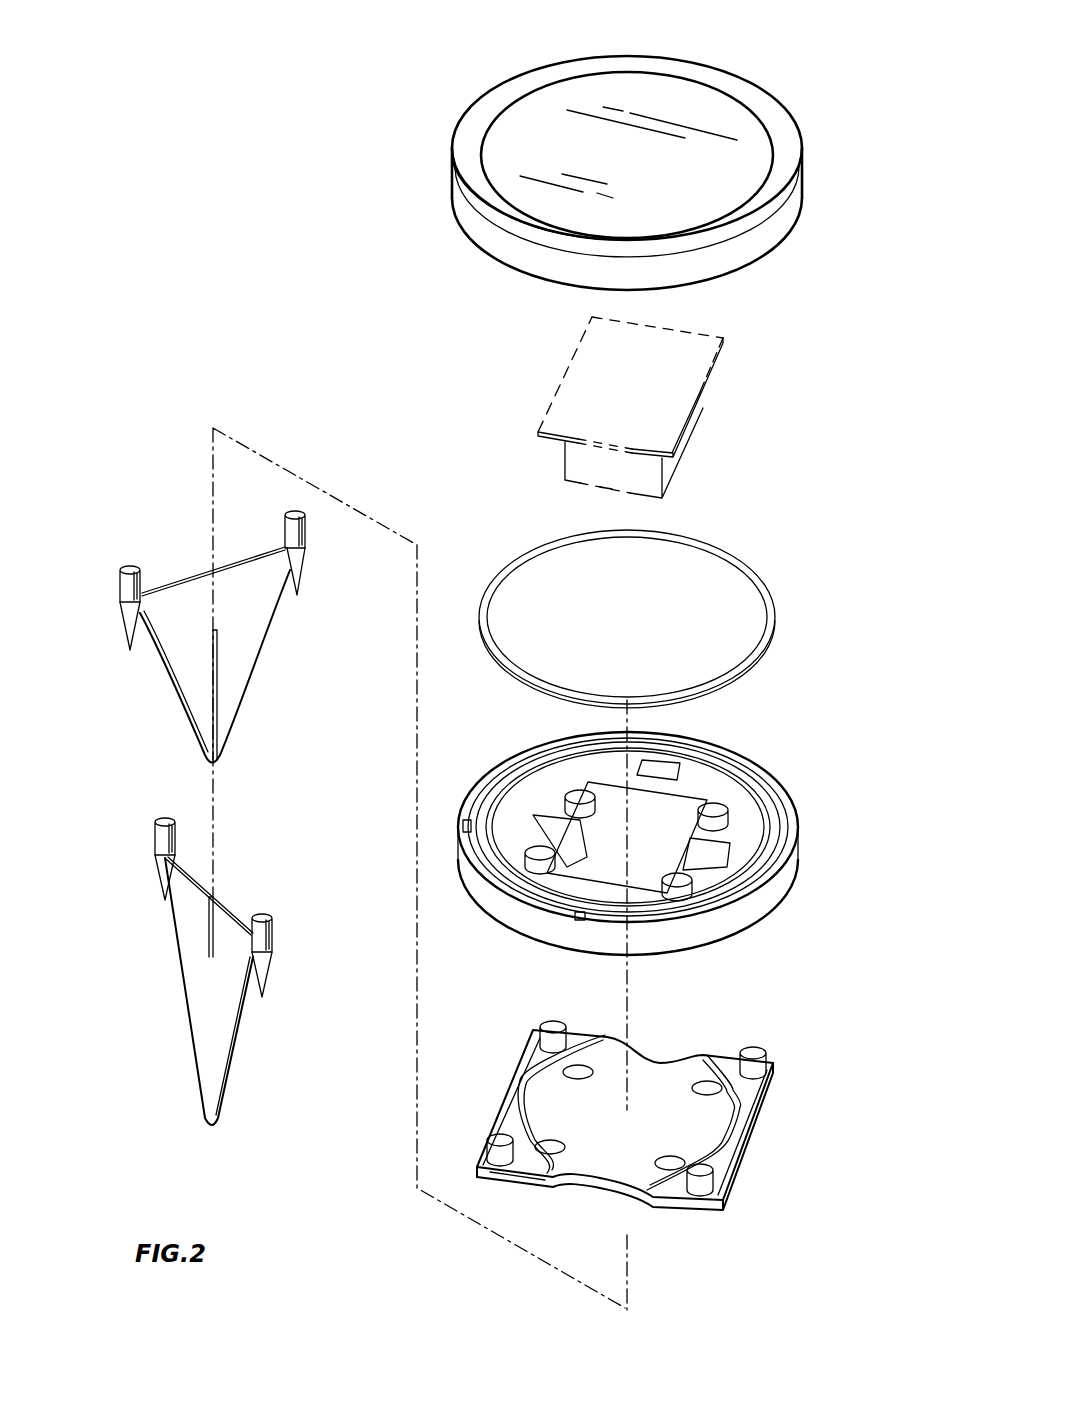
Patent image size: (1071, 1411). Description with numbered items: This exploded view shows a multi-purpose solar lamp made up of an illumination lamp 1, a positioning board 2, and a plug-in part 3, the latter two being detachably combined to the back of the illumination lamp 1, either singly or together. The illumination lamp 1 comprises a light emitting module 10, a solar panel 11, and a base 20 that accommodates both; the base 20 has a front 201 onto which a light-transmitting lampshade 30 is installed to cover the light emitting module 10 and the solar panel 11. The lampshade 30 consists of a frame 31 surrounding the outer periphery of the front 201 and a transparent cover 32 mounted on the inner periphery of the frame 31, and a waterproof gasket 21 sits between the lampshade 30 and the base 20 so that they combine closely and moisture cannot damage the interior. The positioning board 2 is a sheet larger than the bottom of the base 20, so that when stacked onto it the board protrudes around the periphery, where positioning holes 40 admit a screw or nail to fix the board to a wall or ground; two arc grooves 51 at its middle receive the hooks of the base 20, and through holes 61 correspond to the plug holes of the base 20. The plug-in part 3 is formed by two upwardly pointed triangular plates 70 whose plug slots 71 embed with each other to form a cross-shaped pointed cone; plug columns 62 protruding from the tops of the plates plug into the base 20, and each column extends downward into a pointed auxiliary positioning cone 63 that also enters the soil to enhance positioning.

The illumination lamp 1 is at (797, 100).
The positioning board 2 is at (728, 1222).
The plug-in part 3 is at (160, 542).
The light emitting module 10 is at (562, 459).
The solar panel 11 is at (565, 393).
The base 20 is at (772, 903).
The front 201 is at (735, 800).
The waterproof gasket 21 is at (720, 556).
The light-transmitting lampshade 30 is at (760, 262).
The frame 31 is at (452, 202).
The transparent cover 32 is at (521, 112).
The positioning holes 40 is at (548, 1022).
The arc grooves 51 is at (510, 1100).
The through holes 61 is at (580, 1072).
The plug columns 62 is at (307, 530).
The auxiliary positioning cone 63 is at (301, 572).
The triangular plates 70 is at (182, 708).
The plug slot 71 is at (218, 700).